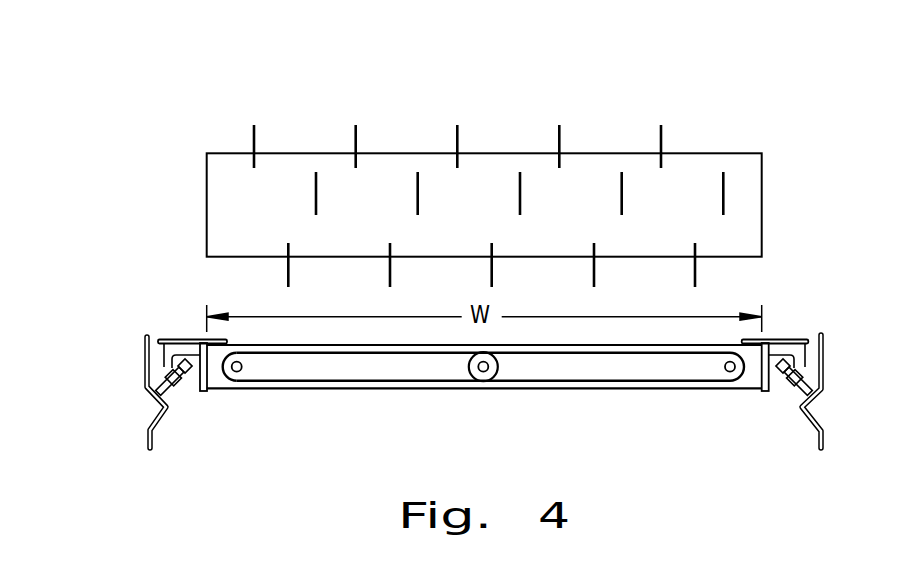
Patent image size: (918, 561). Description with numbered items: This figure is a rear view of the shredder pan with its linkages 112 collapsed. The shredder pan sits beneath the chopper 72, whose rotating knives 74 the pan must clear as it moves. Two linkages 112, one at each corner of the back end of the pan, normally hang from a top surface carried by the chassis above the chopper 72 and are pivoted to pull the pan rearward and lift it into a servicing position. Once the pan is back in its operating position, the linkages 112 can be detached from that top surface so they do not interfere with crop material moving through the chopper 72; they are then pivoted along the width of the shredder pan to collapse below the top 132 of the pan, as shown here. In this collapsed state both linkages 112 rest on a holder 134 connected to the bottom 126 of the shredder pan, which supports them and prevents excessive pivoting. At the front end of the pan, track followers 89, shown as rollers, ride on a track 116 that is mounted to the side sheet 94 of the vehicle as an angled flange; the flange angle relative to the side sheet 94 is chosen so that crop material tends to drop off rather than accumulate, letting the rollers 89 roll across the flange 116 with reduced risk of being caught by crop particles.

The chopper 72 is at (496, 125).
The rotating knives 74 is at (661, 137).
The track follower 89 is at (179, 380).
The side sheet 94 is at (144, 370).
The linkage 112 is at (285, 372).
The track 116 is at (157, 392).
The bottom 126 is at (743, 388).
The top 132 is at (770, 339).
The holder 134 is at (483, 372).